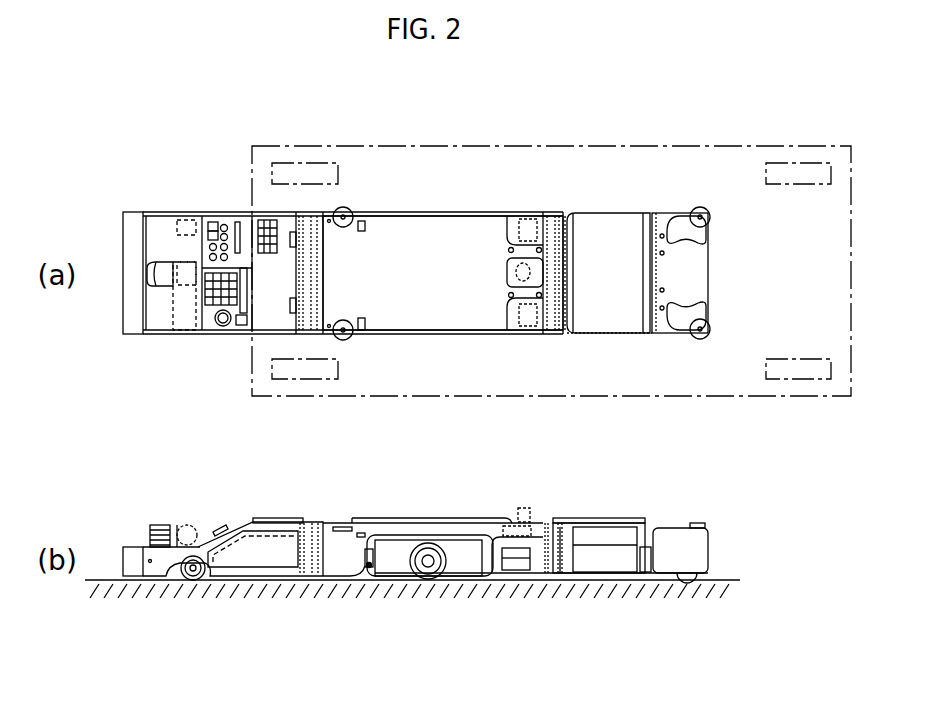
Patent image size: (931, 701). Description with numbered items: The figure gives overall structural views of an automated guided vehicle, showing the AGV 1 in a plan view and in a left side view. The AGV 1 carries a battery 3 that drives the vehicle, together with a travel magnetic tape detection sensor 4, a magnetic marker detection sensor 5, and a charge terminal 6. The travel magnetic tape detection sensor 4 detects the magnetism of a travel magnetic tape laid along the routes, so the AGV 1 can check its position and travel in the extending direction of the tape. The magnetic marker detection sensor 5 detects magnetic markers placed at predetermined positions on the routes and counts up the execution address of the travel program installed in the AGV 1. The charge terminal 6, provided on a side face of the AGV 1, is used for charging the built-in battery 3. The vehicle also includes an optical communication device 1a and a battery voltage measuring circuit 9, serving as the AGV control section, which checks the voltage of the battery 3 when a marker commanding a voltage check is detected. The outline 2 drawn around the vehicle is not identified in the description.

The AGV 1 is at (404, 212).
The optical communication device 1a is at (193, 212).
The transported object 2 is at (738, 160).
The battery 3 is at (606, 228).
The travel magnetic tape detection sensor 4 is at (375, 556).
The magnetic marker detection sensor 5 is at (368, 571).
The charge terminal 6 is at (524, 214).
The battery voltage measuring circuit 9 is at (268, 322).